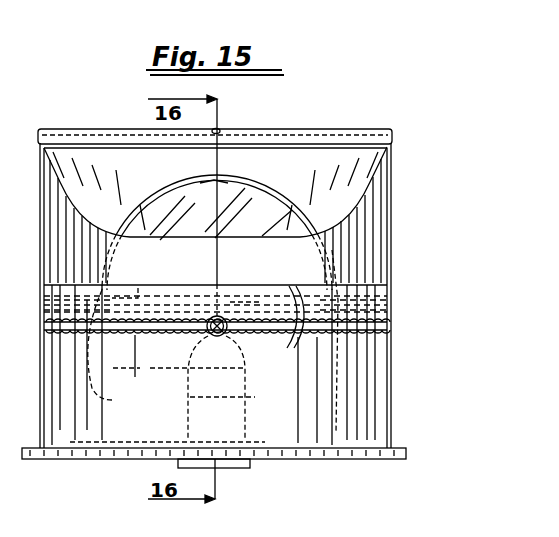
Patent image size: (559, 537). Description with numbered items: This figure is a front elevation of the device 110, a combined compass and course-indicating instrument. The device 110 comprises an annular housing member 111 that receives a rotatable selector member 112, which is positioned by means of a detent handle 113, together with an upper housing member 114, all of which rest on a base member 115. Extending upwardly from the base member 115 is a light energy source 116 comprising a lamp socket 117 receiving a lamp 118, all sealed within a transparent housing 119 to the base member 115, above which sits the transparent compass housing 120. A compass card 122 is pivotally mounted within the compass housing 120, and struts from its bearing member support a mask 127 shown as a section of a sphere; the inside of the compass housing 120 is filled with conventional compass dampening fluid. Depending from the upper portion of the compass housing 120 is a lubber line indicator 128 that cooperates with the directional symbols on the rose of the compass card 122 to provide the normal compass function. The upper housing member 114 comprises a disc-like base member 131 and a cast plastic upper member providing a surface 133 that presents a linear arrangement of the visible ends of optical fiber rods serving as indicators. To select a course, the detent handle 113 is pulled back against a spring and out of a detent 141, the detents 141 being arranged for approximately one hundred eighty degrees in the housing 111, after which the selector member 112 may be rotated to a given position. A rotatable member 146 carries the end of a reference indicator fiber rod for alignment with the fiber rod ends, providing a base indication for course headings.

The device 110 is at (378, 118).
The annular housing member 111 is at (52, 397).
The rotatable selector member 112 is at (92, 390).
The detent handle 113 is at (208, 340).
The upper housing member 114 is at (367, 252).
The base member 115 is at (362, 460).
The light energy source 116 is at (250, 360).
The lamp socket 117 is at (190, 410).
The lamp 118 is at (195, 346).
The transparent housing 119 is at (240, 409).
The transparent compass housing 120 is at (262, 192).
The compass card 122 is at (245, 300).
The mask 127 is at (110, 260).
The lubber line indicator 128 is at (216, 182).
The disc-like base member 131 is at (138, 288).
The surface 133 is at (300, 129).
The detent 141 is at (293, 296).
The rotatable member 146 is at (221, 128).